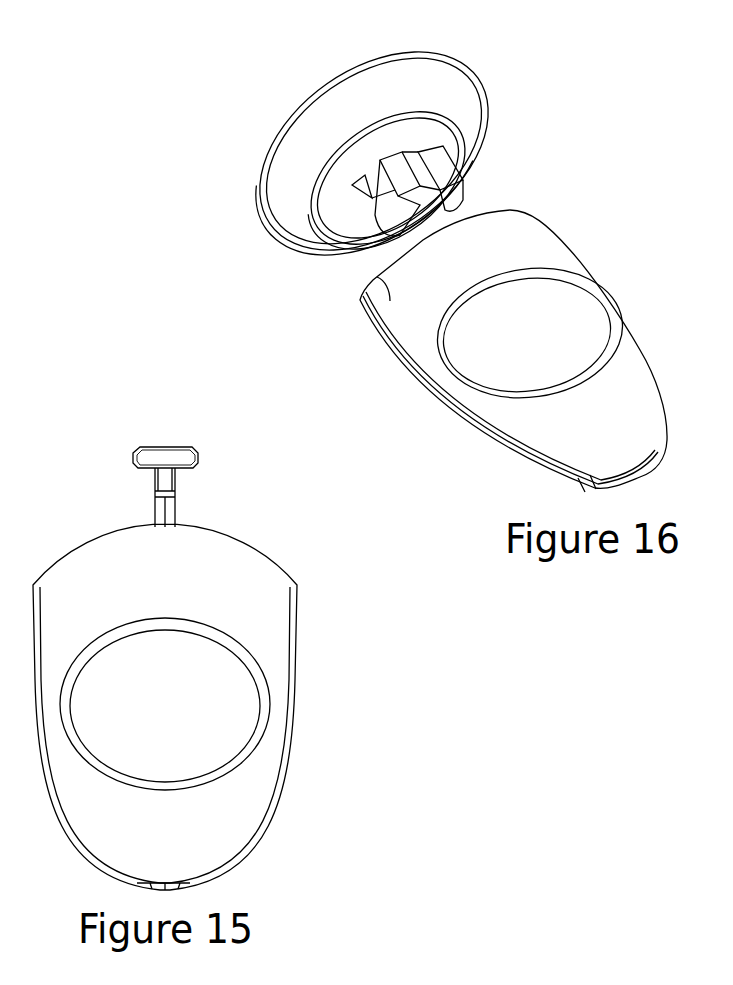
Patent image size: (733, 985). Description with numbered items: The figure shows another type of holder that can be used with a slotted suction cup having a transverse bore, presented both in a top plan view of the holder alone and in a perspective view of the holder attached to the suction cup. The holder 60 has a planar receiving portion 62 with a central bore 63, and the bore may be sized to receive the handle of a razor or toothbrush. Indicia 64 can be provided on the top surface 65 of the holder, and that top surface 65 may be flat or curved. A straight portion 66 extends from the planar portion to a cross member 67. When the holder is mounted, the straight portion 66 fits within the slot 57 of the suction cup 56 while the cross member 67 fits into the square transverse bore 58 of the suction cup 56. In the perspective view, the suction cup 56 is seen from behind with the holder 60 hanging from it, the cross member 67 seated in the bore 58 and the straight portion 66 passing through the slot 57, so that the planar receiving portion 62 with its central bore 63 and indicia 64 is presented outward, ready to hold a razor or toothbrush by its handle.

In FIG. 16, the suction cup 56 is at (365, 82).
In FIG. 16, the slot 57 is at (413, 160).
In FIG. 16, the transverse bore 58 is at (370, 203).
In FIG. 15, the holder 60 is at (286, 546).
In FIG. 16, the holder 60 is at (262, 142).
In FIG. 15, the planar receiving portion 62 is at (267, 807).
In FIG. 16, the planar receiving portion 62 is at (653, 373).
In FIG. 15, the central bore 63 is at (217, 712).
In FIG. 16, the central bore 63 is at (565, 335).
In FIG. 15, the indicia 64 is at (167, 698).
In FIG. 16, the indicia 64 is at (517, 232).
In FIG. 15, the top surface 65 is at (267, 613).
In FIG. 16, the top surface 65 is at (373, 280).
In FIG. 15, the straight portion 66 is at (172, 484).
In FIG. 15, the cross member 67 is at (183, 455).